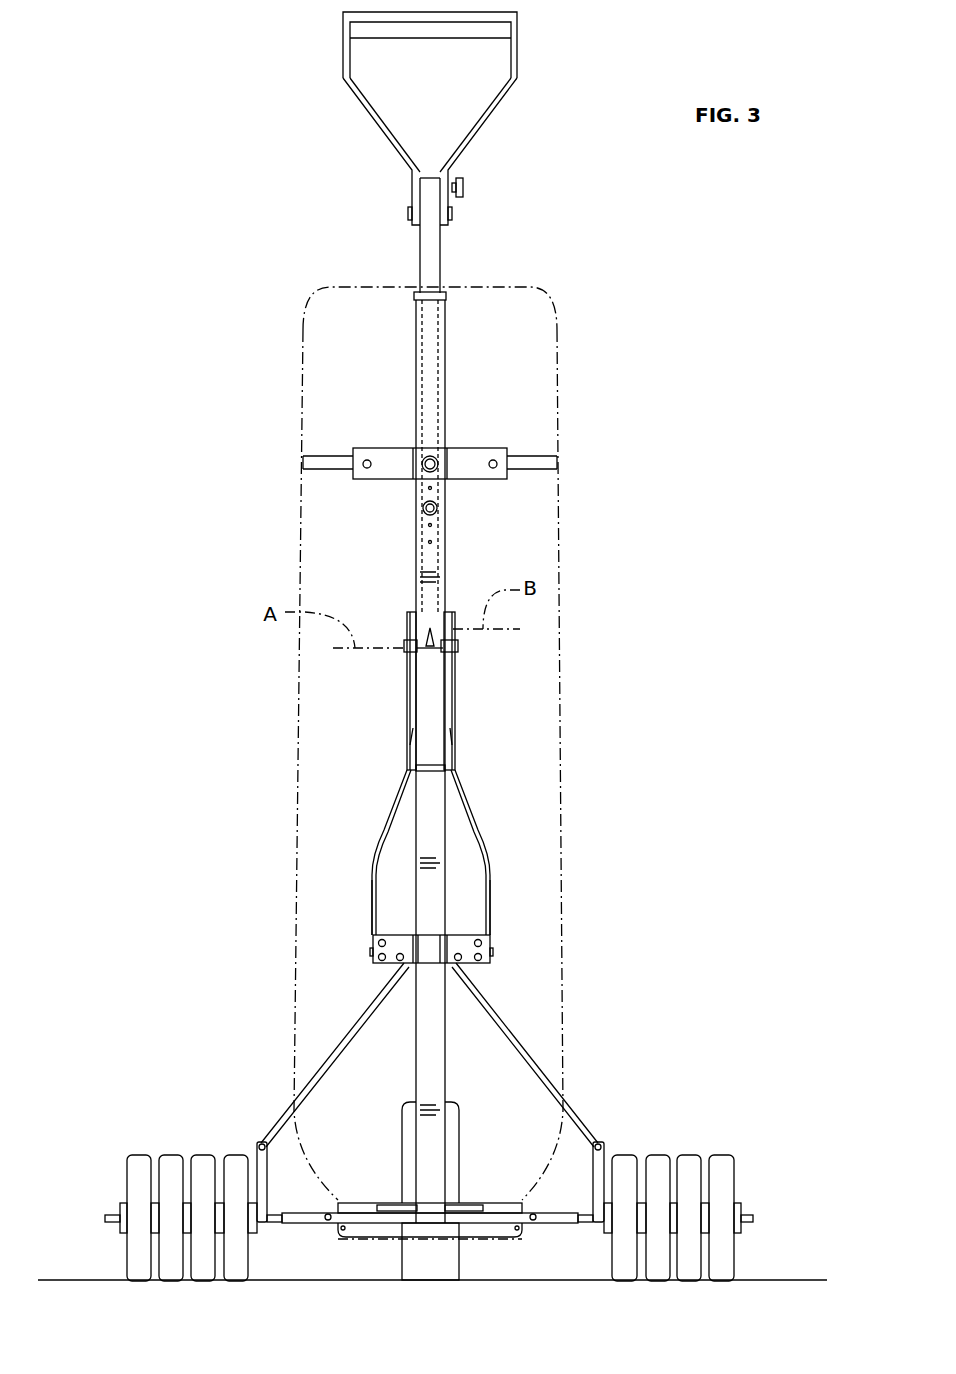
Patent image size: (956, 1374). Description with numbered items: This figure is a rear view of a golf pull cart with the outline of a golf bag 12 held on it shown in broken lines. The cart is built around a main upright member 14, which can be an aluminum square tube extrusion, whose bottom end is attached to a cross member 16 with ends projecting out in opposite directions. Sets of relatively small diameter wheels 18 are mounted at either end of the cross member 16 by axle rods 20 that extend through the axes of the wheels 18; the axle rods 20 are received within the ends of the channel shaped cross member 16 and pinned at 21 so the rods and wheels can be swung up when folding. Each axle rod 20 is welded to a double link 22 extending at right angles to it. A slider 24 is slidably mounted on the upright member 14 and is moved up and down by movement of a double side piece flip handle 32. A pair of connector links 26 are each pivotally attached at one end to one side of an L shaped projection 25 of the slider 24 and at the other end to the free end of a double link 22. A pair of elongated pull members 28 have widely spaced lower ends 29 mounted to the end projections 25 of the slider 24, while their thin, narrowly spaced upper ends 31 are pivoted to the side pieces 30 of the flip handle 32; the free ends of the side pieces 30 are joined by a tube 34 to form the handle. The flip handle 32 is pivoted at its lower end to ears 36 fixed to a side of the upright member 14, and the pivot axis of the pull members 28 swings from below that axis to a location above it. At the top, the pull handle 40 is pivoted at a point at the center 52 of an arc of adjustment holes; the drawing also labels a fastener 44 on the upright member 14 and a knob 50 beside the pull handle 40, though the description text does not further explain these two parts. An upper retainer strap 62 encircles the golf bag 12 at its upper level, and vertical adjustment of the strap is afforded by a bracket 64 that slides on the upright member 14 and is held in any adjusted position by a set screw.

The golf bag 12 is at (561, 613).
The main upright member 14 is at (422, 1052).
The cross member 16 is at (368, 1230).
The wheels 18 is at (238, 1154).
The axle rods 20 is at (111, 1213).
The pin 21 is at (329, 1223).
The double link 22 is at (268, 1187).
The slider 24 is at (384, 941).
The L shaped projection 25 is at (403, 947).
The connector links 26 is at (331, 1043).
The pull members 28 is at (481, 832).
The lower ends 29 is at (371, 892).
The side pieces 30 is at (408, 745).
The upper ends 31 is at (407, 742).
The flip handle 32 is at (430, 770).
The tube 34 is at (442, 765).
The ears 36 is at (431, 628).
The pull handle 40 is at (374, 120).
The ring fastener 44 is at (424, 506).
The knob 50 is at (464, 183).
The center 52 is at (455, 207).
The upper retainer strap 62 is at (533, 462).
The bracket 64 is at (465, 450).